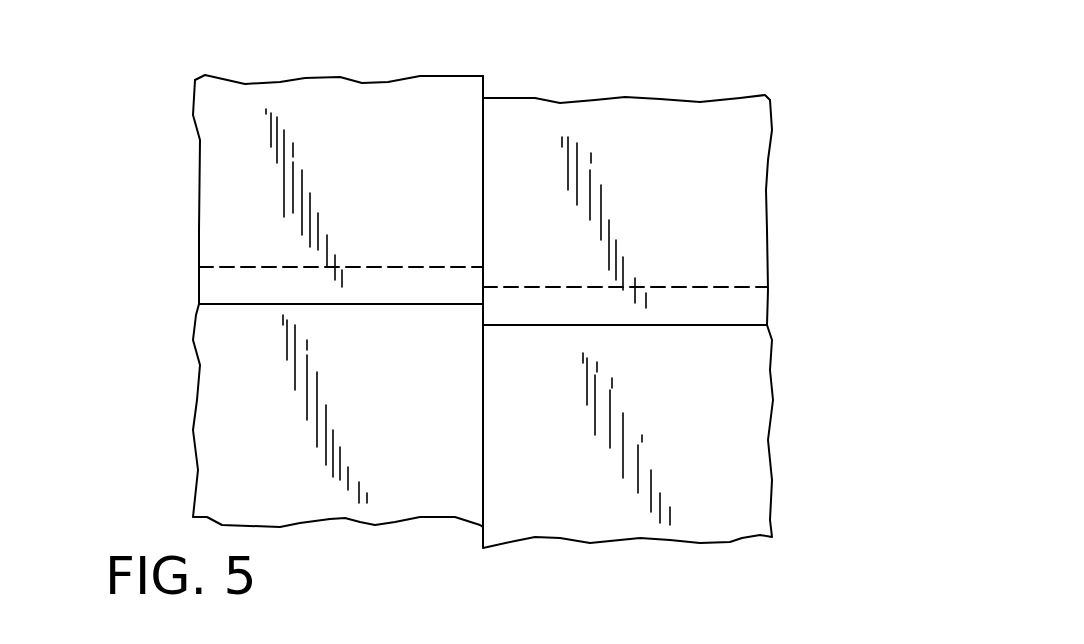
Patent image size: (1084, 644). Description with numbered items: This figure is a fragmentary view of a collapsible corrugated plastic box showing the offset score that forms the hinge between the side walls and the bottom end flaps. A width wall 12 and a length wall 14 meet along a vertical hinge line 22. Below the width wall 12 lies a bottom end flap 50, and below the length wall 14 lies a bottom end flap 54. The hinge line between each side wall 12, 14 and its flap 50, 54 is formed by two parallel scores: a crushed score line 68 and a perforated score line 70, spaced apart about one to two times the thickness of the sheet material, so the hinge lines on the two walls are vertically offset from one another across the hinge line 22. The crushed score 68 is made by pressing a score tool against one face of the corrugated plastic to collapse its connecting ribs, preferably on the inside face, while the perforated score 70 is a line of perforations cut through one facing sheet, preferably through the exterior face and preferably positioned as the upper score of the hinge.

The width wall 12 is at (748, 190).
The length wall 14 is at (233, 210).
The vertical hinge line 22 is at (483, 143).
The bottom end flap 50 is at (740, 453).
The bottom end flap 54 is at (228, 468).
The crushed score line 68 is at (253, 304).
The perforated score line 70 is at (246, 267).